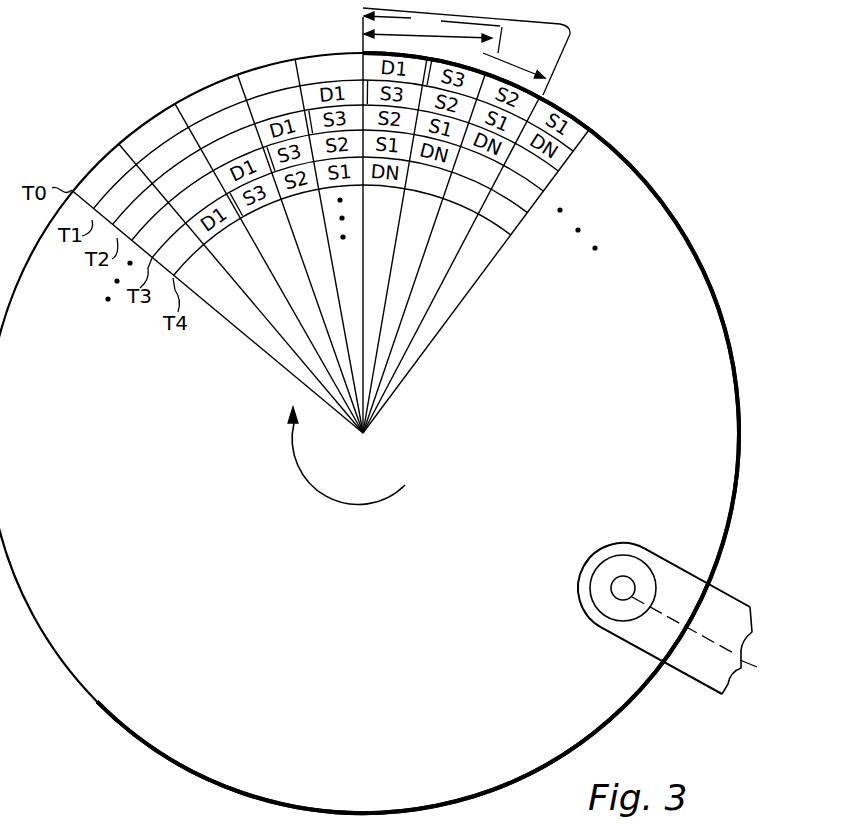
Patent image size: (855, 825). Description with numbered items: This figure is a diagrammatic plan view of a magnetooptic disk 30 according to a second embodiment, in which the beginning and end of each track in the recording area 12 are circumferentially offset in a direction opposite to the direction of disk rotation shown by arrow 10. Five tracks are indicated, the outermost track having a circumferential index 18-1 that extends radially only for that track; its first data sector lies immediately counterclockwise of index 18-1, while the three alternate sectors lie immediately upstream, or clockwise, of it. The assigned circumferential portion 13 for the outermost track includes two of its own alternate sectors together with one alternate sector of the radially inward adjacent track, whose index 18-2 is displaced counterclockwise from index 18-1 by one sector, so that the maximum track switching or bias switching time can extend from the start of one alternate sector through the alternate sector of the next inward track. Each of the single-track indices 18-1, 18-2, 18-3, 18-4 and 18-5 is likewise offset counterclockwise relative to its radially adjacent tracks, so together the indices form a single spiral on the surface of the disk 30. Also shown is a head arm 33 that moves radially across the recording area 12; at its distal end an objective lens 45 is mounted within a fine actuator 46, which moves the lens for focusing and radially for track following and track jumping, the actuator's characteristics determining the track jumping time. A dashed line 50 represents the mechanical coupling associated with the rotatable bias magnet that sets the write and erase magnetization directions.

The arrow 10 is at (295, 448).
The recording area 12 is at (676, 425).
The circumferential portion 13 is at (497, 13).
The index 18-1 is at (360, 90).
The index 18-2 is at (424, 64).
The index 18-3 is at (308, 122).
The index 18-4 is at (270, 175).
The index 18-5 is at (233, 205).
The magnetooptic disk 30 is at (207, 86).
The head arm 33 is at (648, 655).
The objective lens 45 is at (632, 578).
The fine actuator 46 is at (608, 623).
The dashed line 50 is at (755, 672).